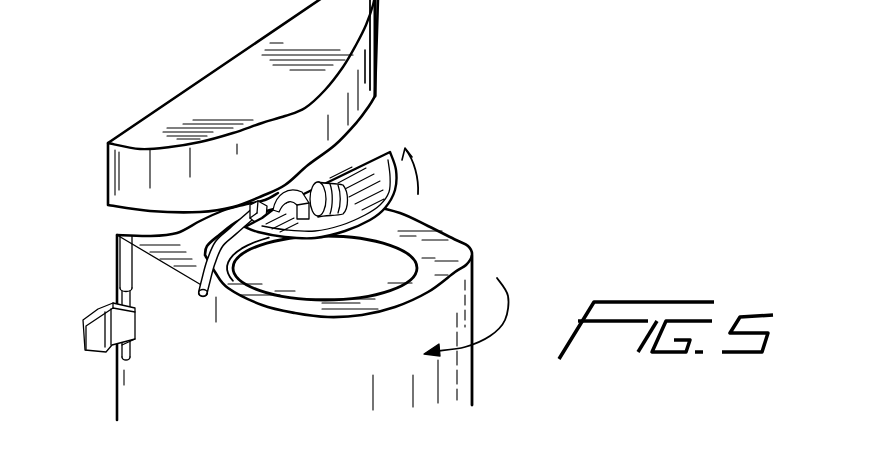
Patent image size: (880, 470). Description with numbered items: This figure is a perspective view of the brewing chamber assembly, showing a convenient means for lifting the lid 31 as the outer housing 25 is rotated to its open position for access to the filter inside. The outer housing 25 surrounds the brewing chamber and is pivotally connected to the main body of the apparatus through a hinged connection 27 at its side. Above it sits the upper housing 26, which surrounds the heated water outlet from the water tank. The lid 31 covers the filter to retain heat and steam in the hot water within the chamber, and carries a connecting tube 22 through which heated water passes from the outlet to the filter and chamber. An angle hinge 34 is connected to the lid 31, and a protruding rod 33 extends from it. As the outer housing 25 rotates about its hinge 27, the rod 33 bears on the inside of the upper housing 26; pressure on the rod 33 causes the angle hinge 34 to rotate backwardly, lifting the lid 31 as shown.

The connecting tube 22 is at (366, 156).
The outer housing 25 is at (462, 388).
The upper housing 26 is at (372, 53).
The hinged connection 27 is at (97, 305).
The lid 31 is at (398, 178).
The protruding rod 33 is at (232, 293).
The angle hinge 34 is at (293, 193).